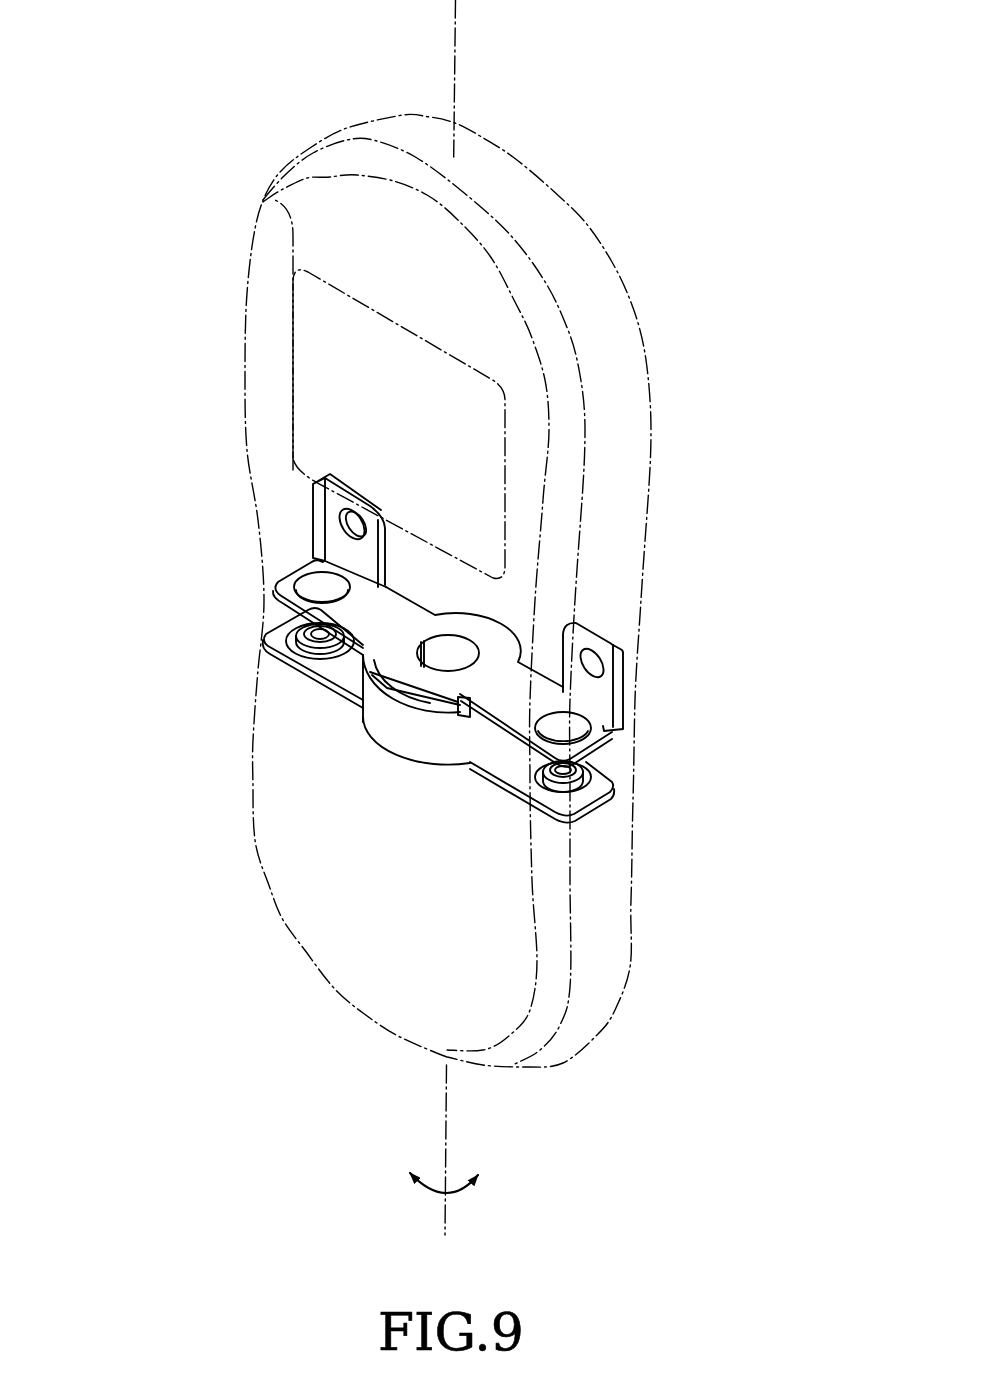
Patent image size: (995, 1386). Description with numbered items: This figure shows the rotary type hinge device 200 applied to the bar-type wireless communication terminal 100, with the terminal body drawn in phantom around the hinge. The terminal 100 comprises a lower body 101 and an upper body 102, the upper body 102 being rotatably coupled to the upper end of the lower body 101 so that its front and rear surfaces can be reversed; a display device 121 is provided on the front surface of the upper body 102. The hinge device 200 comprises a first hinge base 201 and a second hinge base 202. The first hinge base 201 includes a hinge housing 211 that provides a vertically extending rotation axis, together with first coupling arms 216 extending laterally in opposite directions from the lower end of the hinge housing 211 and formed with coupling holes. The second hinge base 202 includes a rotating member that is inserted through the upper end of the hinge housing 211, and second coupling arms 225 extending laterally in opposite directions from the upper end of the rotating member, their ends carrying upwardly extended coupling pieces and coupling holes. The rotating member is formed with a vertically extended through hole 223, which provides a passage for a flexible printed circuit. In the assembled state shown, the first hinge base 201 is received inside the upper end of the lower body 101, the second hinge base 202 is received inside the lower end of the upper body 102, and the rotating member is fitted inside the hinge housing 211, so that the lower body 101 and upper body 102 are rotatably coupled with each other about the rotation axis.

The wireless communication terminal 100 is at (129, 104).
The lower body 101 is at (249, 855).
The upper body 102 is at (580, 192).
The display device 121 is at (312, 369).
The rotary type hinge device 200 is at (647, 692).
The first hinge base 201 is at (321, 710).
The second hinge base 202 is at (434, 589).
The hinge housing 211 is at (381, 738).
The first coupling arms 216 is at (312, 664).
The through hole 223 is at (462, 647).
The second coupling arms 225 is at (282, 582).